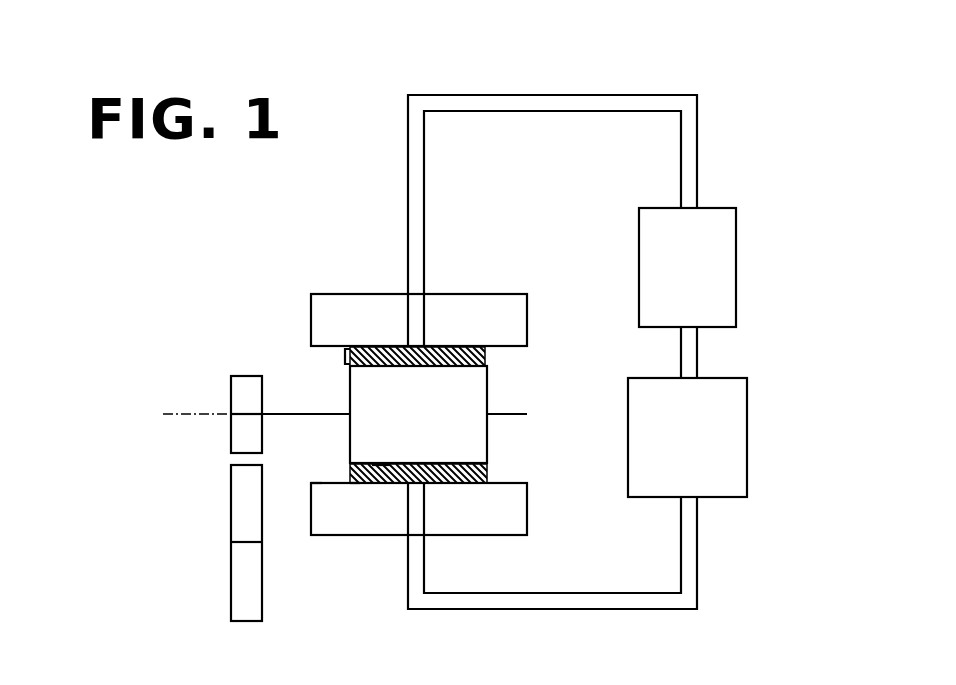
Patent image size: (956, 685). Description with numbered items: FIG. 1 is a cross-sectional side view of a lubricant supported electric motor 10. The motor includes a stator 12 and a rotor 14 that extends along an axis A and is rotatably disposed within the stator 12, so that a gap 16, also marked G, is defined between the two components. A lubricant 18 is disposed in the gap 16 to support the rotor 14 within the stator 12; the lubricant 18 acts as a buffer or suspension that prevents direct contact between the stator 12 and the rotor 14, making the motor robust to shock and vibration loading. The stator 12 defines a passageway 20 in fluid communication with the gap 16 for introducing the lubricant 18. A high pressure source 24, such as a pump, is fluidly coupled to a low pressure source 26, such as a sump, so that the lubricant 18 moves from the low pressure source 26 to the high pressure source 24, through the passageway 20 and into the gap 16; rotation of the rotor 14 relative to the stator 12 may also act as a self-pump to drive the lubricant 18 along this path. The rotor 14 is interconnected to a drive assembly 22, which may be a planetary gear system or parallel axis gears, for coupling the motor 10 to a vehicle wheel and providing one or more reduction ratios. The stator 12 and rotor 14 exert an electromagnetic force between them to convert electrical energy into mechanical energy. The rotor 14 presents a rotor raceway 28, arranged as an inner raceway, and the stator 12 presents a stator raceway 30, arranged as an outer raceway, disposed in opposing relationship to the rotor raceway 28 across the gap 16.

The lubricant supported electric motor 10 is at (722, 92).
The stator 12 is at (490, 294).
The rotor 14 is at (490, 392).
The gap 16 is at (490, 356).
The lubricant 18 is at (355, 482).
The passageway 20 is at (424, 316).
The drive assembly 22 is at (231, 525).
The high pressure source 24 is at (712, 207).
The low pressure source 26 is at (725, 378).
The rotor raceway 28 is at (380, 467).
The stator raceway 30 is at (320, 472).
The gap G is at (344, 350).
The axis A is at (181, 412).